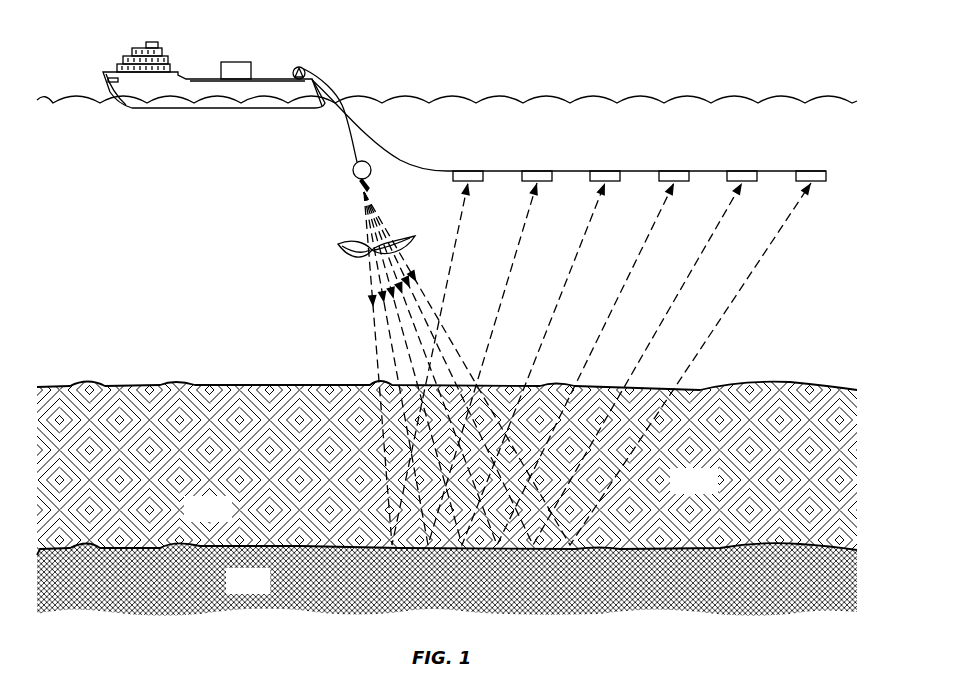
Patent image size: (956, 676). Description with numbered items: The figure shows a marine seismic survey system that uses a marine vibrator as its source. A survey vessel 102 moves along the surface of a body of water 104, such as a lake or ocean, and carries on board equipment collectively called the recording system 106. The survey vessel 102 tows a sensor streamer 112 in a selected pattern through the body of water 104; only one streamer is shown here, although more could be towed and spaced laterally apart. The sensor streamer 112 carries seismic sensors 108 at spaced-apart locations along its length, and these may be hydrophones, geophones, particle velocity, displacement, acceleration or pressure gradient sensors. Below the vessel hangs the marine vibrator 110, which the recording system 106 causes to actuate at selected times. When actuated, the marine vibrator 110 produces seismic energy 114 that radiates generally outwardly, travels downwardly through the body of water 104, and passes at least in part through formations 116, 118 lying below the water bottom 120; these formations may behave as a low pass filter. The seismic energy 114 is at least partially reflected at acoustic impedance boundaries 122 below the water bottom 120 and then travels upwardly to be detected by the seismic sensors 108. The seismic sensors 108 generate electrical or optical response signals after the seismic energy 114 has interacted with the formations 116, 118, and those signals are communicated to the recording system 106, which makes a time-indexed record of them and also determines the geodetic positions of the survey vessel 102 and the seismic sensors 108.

The survey vessel 102 is at (152, 43).
The body of water 104 is at (191, 274).
The recording system 106 is at (236, 62).
The seismic sensors 108 is at (468, 177).
The marine vibrator 110 is at (353, 170).
The sensor streamer 112 is at (392, 153).
The seismic energy 114 is at (376, 243).
The formation 116 is at (712, 492).
The formation 118 is at (265, 593).
The water bottom 120 is at (145, 386).
The acoustic impedance boundary 122 is at (145, 548).